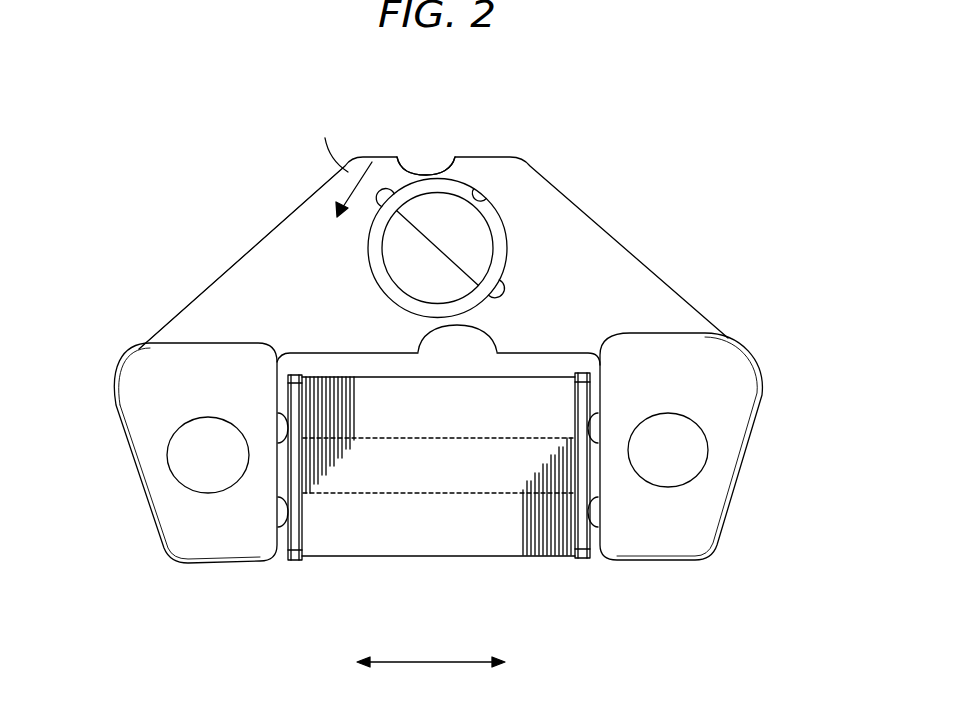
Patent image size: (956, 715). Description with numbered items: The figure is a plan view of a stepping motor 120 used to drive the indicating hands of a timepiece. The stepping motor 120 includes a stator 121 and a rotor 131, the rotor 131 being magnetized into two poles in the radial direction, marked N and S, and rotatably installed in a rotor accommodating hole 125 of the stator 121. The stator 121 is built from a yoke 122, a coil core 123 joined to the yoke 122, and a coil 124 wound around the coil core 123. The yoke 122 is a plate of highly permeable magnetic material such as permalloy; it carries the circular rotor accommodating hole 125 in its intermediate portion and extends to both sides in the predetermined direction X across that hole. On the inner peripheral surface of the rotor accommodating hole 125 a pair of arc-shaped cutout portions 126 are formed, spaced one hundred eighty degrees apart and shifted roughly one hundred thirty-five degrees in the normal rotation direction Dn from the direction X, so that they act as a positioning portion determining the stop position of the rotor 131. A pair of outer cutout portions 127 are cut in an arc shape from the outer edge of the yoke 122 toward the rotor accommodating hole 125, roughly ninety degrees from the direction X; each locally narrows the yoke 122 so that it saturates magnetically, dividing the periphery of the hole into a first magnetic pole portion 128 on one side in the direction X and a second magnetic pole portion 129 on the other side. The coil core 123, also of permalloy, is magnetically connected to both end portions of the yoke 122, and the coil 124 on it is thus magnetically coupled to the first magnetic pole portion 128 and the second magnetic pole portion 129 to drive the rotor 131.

The stepping motor 120 is at (657, 119).
The stator 121 is at (652, 274).
The yoke 122 is at (272, 276).
The coil core 123 is at (657, 548).
The coil 124 is at (342, 537).
The rotor accommodating hole 125 is at (482, 197).
The cutout portions 126 is at (398, 190).
The outer cutout portions 127 is at (419, 172).
The first magnetic pole portion 128 is at (523, 233).
The second magnetic pole portion 129 is at (342, 257).
The rotor 131 is at (447, 192).